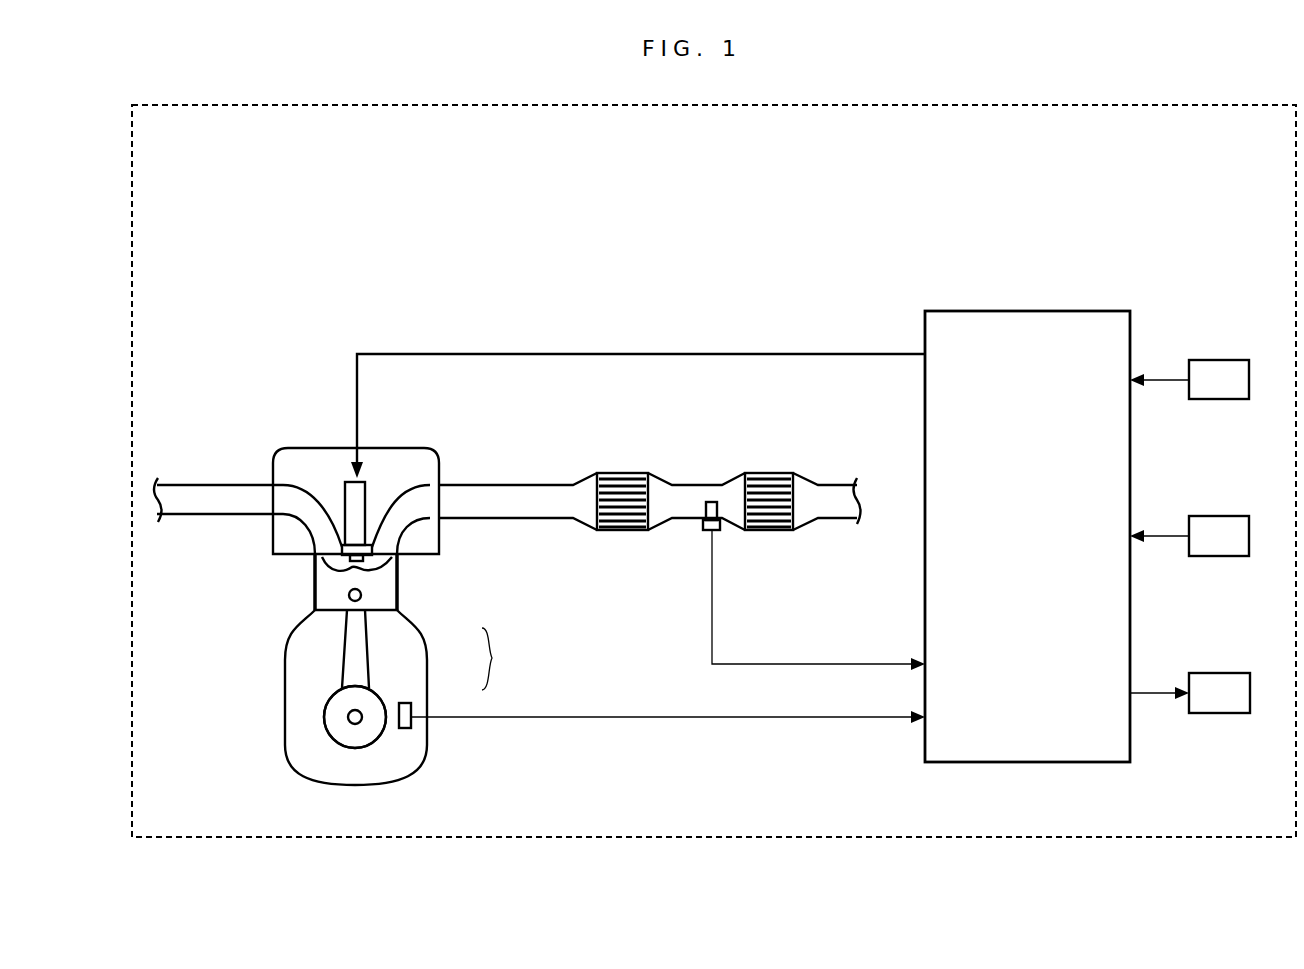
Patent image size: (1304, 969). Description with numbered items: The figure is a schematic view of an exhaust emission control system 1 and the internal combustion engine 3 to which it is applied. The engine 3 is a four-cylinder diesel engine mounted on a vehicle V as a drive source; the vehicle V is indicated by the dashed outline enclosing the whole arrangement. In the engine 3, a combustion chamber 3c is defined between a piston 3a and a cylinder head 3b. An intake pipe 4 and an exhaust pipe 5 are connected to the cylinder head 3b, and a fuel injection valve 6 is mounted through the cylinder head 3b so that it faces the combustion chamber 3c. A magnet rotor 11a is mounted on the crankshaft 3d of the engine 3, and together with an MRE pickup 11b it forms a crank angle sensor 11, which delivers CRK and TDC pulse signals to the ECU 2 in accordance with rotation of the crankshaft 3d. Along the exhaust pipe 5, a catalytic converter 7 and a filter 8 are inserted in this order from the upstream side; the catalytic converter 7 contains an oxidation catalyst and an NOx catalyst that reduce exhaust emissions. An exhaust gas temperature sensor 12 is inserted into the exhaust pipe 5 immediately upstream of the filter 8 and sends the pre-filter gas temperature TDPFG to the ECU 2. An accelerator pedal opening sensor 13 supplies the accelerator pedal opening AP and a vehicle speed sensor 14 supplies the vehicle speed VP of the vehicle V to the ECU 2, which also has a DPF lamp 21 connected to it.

The vehicle V is at (870, 106).
The exhaust emission control system 1 is at (1072, 197).
The ECU 2 is at (1033, 762).
The internal combustion engine 3 is at (280, 757).
The piston 3a is at (331, 591).
The cylinder head 3b is at (323, 458).
The combustion chamber 3c is at (377, 563).
The crankshaft 3d is at (361, 722).
The intake pipe 4 is at (183, 515).
The exhaust pipe 5 is at (518, 521).
The fuel injection valve 6 is at (367, 486).
The catalytic converter 7 is at (620, 531).
The filter 8 is at (770, 531).
The crank angle sensor 11 is at (500, 659).
The magnet rotor 11a is at (375, 690).
The MRE pickup 11b is at (405, 703).
The exhaust gas temperature sensor 12 is at (705, 531).
The accelerator pedal opening sensor 13 is at (1232, 360).
The vehicle speed sensor 14 is at (1232, 516).
The DPF lamp 21 is at (1232, 673).